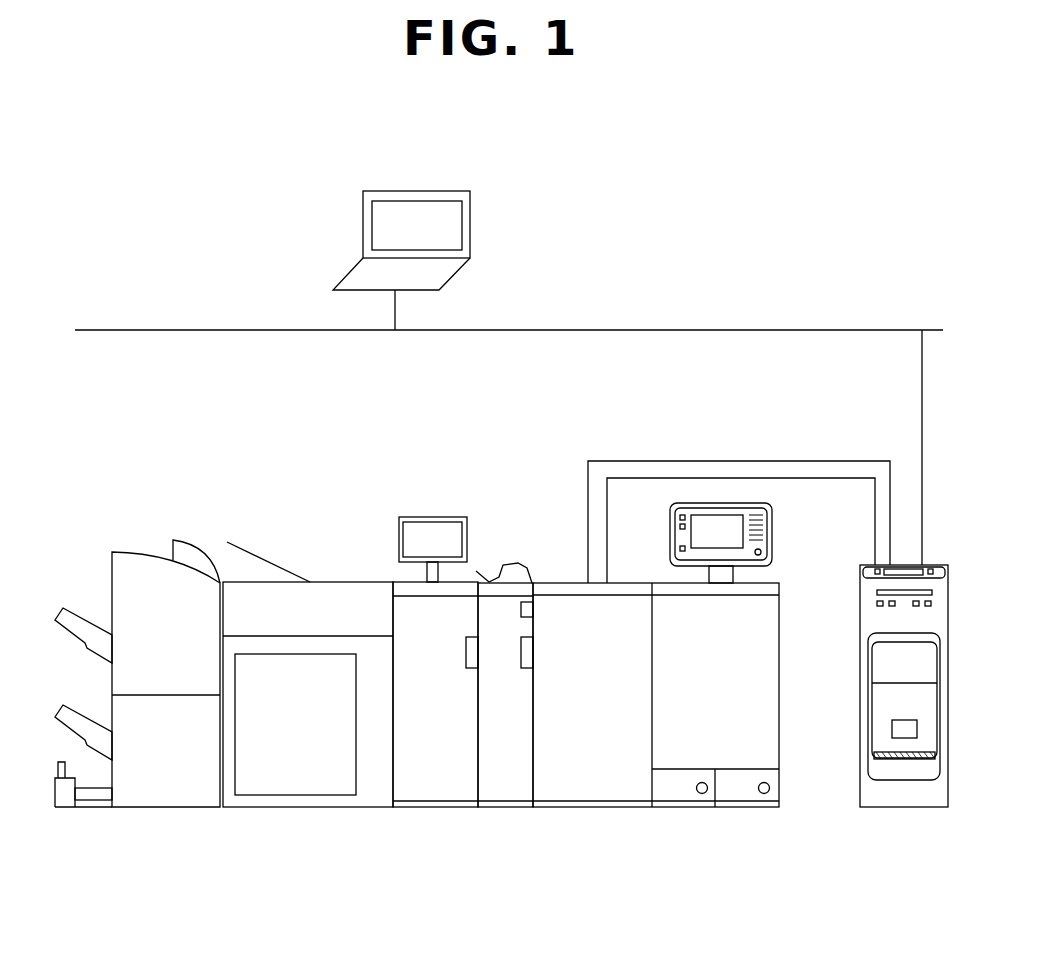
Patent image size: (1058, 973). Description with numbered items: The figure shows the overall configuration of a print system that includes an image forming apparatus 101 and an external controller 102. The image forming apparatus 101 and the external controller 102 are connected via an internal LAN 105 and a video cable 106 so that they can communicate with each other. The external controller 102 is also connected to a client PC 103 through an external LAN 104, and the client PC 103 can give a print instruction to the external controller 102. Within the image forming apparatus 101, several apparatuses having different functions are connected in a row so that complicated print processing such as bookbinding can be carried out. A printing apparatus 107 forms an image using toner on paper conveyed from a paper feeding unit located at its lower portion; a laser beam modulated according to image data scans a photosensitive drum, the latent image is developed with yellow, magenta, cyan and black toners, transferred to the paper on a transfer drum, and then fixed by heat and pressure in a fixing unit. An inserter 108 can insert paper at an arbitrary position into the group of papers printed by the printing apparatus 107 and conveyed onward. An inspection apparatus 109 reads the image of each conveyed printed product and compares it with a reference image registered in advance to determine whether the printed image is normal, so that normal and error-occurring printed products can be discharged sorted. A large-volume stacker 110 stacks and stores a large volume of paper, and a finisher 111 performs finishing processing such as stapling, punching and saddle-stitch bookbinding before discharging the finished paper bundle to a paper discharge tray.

The image forming apparatus 101 is at (420, 715).
The external controller 102 is at (900, 808).
The client PC 103 is at (363, 214).
The external LAN 104 is at (772, 330).
The internal LAN 105 is at (832, 480).
The video cable 106 is at (787, 460).
The printing apparatus 107 is at (656, 684).
The inserter 108 is at (518, 803).
The inspection apparatus 109 is at (436, 802).
The large-volume stacker 110 is at (283, 800).
The finisher 111 is at (160, 800).